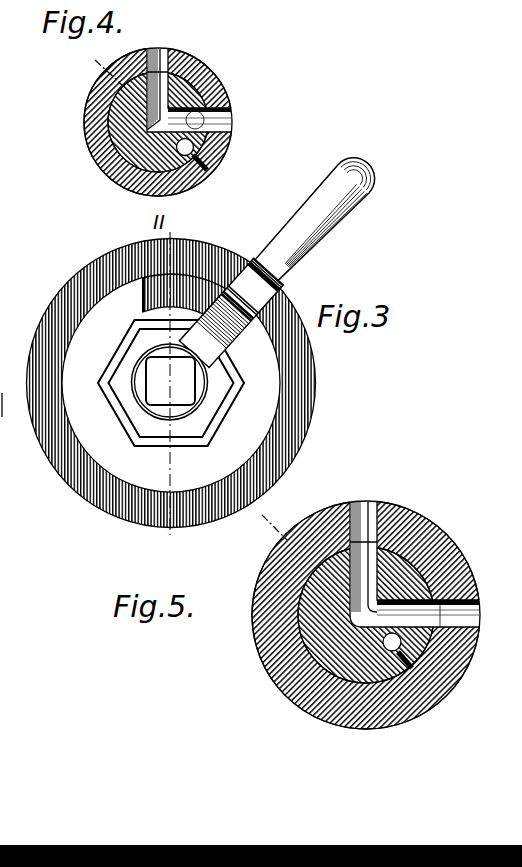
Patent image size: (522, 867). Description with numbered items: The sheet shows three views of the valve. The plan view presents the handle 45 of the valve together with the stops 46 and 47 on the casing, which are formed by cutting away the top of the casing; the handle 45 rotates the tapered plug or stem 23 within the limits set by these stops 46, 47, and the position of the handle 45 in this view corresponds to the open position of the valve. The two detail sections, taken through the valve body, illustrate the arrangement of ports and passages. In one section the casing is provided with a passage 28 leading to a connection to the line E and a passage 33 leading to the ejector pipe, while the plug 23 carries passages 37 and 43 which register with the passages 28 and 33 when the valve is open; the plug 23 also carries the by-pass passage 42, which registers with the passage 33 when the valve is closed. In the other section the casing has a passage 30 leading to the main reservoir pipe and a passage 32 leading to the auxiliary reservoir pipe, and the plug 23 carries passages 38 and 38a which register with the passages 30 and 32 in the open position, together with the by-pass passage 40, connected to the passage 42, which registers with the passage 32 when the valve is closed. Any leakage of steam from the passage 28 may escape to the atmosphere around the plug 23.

In FIG. 4, the passage 28 is at (157, 117).
In FIG. 4, the passage 37 is at (178, 84).
In FIG. 4, the passage 33 is at (205, 126).
In FIG. 4, the passage 43 is at (210, 133).
In FIG. 4, the passage 42 is at (187, 167).
In FIG. 3, the handle 45 is at (356, 180).
In FIG. 3, the stop 46 is at (121, 300).
In FIG. 3, the stop 47 is at (253, 346).
In FIG. 3, the tapered plug or stem 23 is at (11, 428).
In FIG. 3, the line E is at (3, 383).
In FIG. 5, the passage 30 is at (363, 598).
In FIG. 5, the passage 38 is at (398, 553).
In FIG. 5, the passage 32 is at (458, 600).
In FIG. 5, the passage 38a is at (445, 618).
In FIG. 5, the passage 40 is at (412, 633).